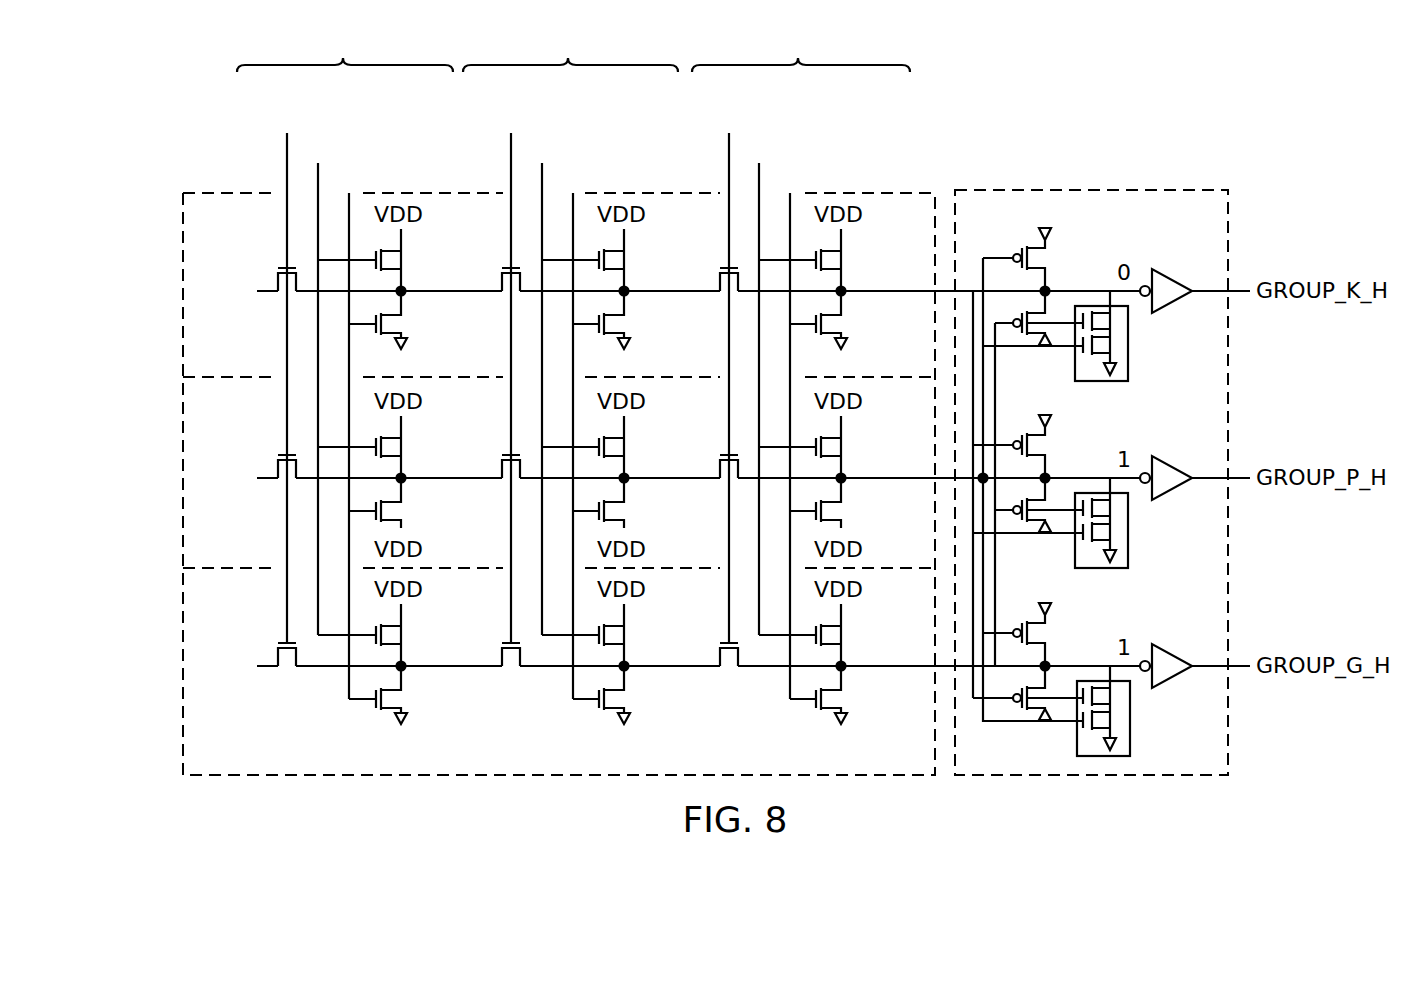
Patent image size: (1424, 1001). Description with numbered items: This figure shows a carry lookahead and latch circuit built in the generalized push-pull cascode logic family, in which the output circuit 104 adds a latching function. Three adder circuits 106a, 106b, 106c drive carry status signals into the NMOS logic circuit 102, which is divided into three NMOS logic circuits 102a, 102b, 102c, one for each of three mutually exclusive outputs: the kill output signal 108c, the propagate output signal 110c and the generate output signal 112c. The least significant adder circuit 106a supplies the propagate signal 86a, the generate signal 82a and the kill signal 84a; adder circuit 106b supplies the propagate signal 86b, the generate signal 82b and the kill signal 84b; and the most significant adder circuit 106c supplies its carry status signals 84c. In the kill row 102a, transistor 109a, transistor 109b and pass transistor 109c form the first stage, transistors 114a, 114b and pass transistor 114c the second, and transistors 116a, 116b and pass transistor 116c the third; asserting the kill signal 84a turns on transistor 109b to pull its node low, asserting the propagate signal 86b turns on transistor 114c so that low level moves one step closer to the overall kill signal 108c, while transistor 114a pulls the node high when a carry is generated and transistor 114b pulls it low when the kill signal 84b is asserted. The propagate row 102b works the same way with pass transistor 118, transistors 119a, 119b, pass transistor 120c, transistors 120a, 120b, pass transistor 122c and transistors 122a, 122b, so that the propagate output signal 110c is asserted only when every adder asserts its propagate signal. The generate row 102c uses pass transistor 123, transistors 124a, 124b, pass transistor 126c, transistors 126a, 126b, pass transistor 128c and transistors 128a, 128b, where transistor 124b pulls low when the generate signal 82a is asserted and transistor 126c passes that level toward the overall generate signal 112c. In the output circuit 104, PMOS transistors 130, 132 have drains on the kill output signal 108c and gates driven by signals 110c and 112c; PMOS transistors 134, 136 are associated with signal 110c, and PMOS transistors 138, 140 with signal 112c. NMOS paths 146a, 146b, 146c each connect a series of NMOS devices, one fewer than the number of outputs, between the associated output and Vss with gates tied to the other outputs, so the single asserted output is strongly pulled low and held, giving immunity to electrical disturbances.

The adder circuit 106a is at (345, 38).
The adder circuit 106b is at (570, 38).
The adder circuit 106c is at (801, 38).
The propagate signal 86a is at (288, 108).
The generate signal 82a is at (352, 141).
The kill signal 84a is at (383, 170).
The propagate signal 86b is at (512, 108).
The generate signal 82b is at (577, 141).
The kill signal 84b is at (607, 170).
The carry status signals 84c is at (845, 148).
The NMOS logic circuit 102 is at (896, 190).
The output circuit 104 is at (1062, 188).
The NMOS logic circuit 102a is at (183, 294).
The NMOS logic circuit 102b is at (183, 481).
The NMOS logic circuit 102c is at (183, 669).
The transistor 109a is at (392, 257).
The transistor 109b is at (396, 323).
The transistor 109c is at (282, 299).
The transistor 114a is at (615, 257).
The transistor 114b is at (619, 323).
The transistor 114c is at (504, 298).
The transistor 116a is at (837, 262).
The transistor 116b is at (837, 320).
The transistor 116c is at (722, 298).
The kill output signal 108c is at (923, 289).
The transistor 118 is at (282, 486).
The transistor 119a is at (392, 444).
The transistor 119b is at (396, 510).
The transistor 120a is at (615, 444).
The transistor 120b is at (619, 510).
The transistor 120c is at (504, 485).
The transistor 122a is at (837, 449).
The transistor 122b is at (837, 507).
The transistor 122c is at (722, 485).
The propagate output signal 110c is at (921, 476).
The transistor 123 is at (281, 669).
The transistor 124a is at (398, 638).
The NMOS transistor 124b is at (400, 697).
The transistor 126a is at (621, 638).
The transistor 126b is at (623, 697).
The transistor 126c is at (504, 674).
The transistor 128a is at (837, 637).
The transistor 128b is at (837, 695).
The transistor 128c is at (722, 674).
The generate output signal 112c is at (921, 665).
The PMOS transistor 130 is at (1033, 247).
The PMOS transistor 132 is at (1035, 337).
The PMOS transistor 134 is at (1035, 434).
The PMOS transistor 136 is at (1040, 525).
The PMOS transistor 138 is at (1035, 622).
The PMOS transistor 140 is at (1040, 713).
The NMOS path 146a is at (1130, 352).
The NMOS path 146b is at (1130, 540).
The NMOS path 146c is at (1132, 727).